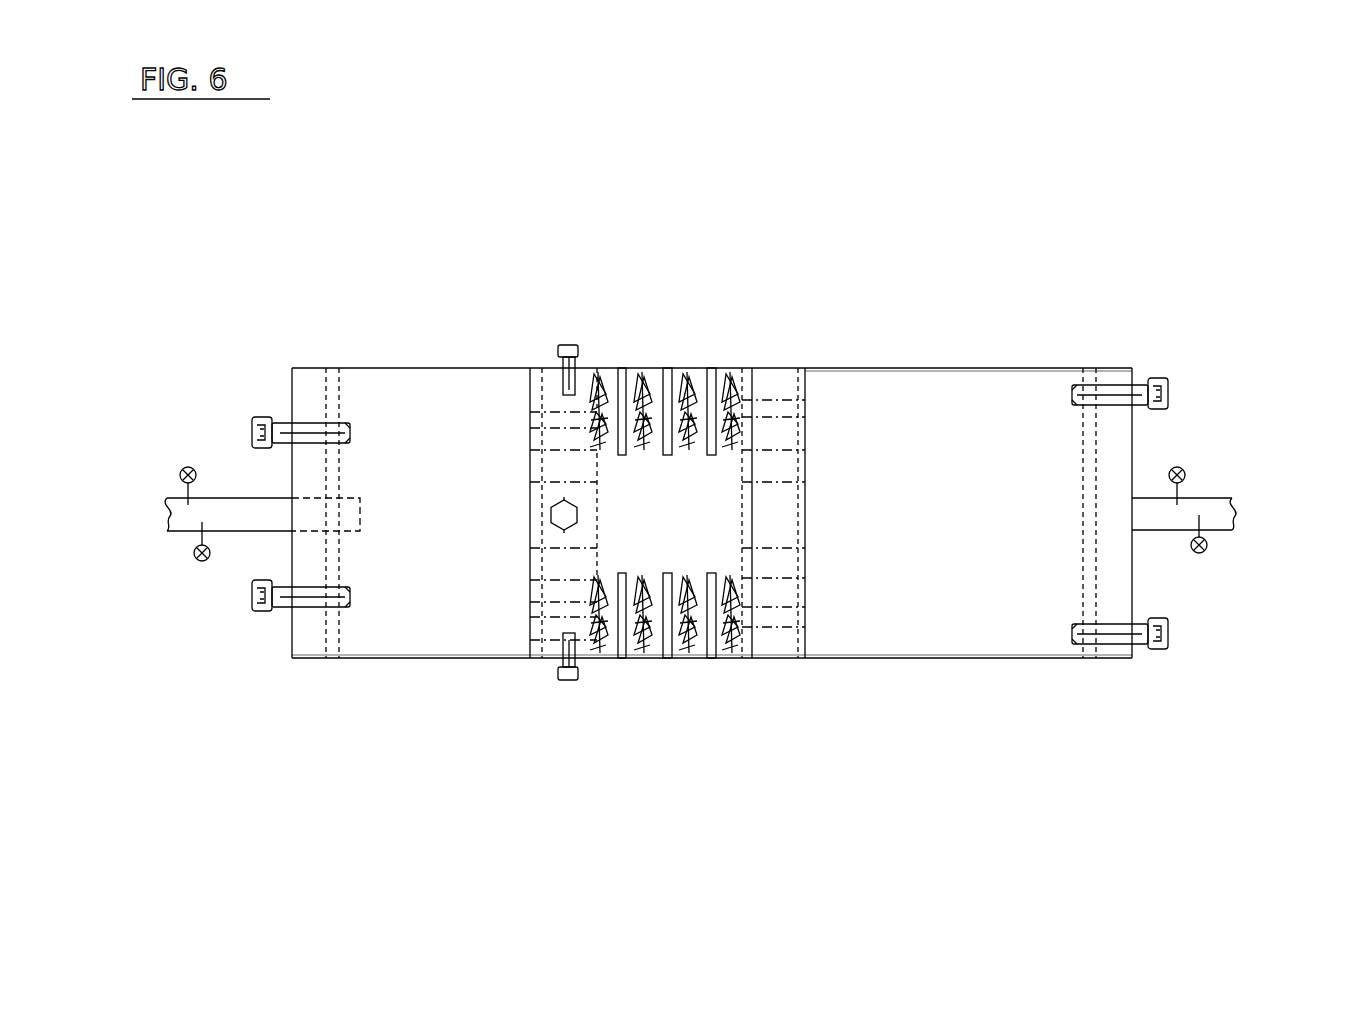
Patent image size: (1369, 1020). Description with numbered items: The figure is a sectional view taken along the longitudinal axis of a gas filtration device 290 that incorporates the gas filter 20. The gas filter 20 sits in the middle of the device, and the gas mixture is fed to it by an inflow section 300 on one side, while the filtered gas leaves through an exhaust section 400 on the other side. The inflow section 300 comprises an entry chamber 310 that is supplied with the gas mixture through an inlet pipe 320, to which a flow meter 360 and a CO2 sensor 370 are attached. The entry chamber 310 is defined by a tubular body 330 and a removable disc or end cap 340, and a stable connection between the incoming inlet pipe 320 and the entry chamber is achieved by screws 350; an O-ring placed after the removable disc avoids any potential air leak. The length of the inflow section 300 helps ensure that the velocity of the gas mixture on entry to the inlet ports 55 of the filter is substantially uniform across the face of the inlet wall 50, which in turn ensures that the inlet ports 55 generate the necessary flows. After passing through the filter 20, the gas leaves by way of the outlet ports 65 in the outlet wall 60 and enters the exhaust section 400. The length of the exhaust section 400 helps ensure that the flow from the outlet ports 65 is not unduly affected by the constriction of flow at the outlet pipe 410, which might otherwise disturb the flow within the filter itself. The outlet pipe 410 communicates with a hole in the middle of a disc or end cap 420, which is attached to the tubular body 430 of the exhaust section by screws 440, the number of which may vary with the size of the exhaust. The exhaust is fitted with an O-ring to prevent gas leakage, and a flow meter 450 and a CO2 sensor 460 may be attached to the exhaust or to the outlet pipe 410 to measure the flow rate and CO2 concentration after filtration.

The gas filtration device 290 is at (935, 162).
The inflow section 300 is at (392, 310).
The entry chamber 310 is at (460, 533).
The inlet pipe 320 is at (167, 516).
The tubular body 330 is at (432, 658).
The removable disc or end cap 340 is at (305, 650).
The screws 350 is at (262, 613).
The flow meter 360 is at (188, 466).
The CO2 sensor 370 is at (202, 561).
The gas filter 20 is at (700, 327).
The inlet wall 50 is at (553, 635).
The inlet ports 55 is at (568, 567).
The outlet wall 60 is at (783, 650).
The outlet ports 65 is at (763, 568).
The exhaust section 400 is at (997, 318).
The outlet pipe 410 is at (1232, 523).
The disc or end cap 420 is at (1115, 650).
The tubular body 430 is at (933, 658).
The screws 440 is at (1170, 650).
The flow meter 450 is at (1177, 467).
The CO2 sensor 460 is at (1199, 553).